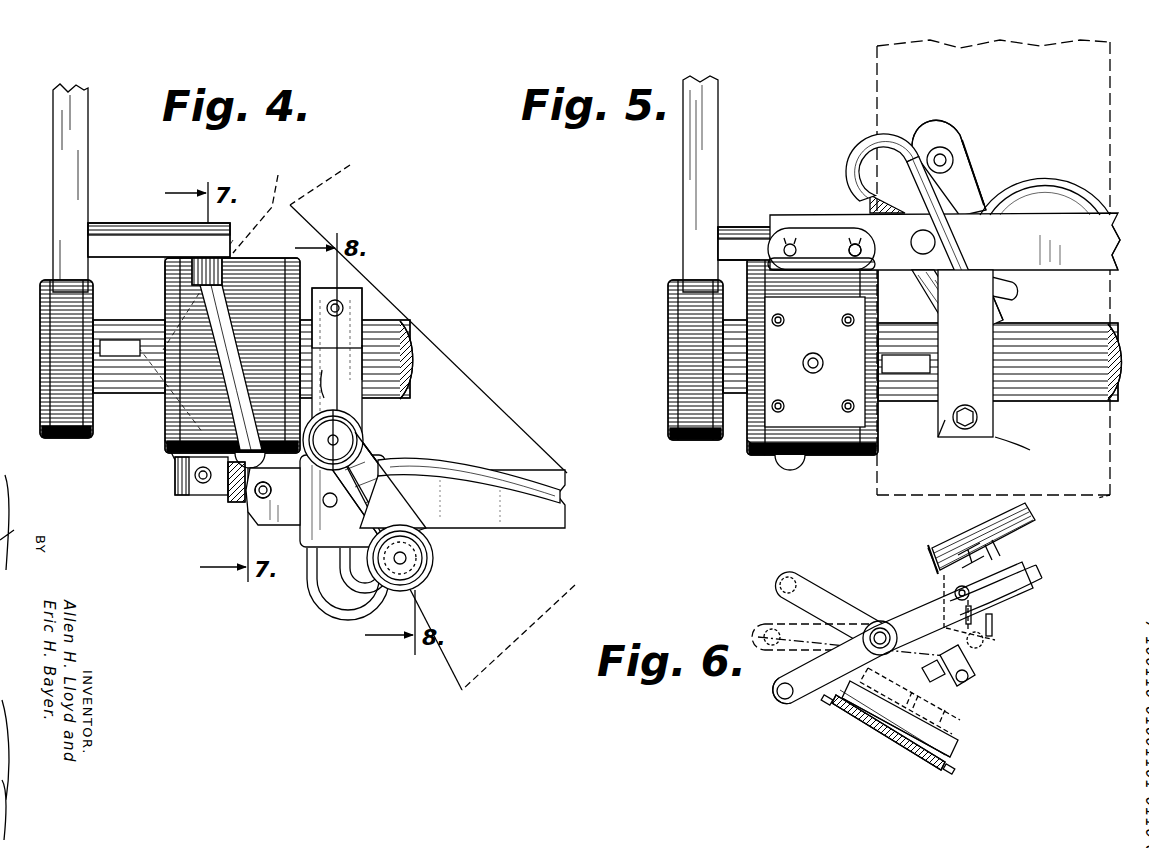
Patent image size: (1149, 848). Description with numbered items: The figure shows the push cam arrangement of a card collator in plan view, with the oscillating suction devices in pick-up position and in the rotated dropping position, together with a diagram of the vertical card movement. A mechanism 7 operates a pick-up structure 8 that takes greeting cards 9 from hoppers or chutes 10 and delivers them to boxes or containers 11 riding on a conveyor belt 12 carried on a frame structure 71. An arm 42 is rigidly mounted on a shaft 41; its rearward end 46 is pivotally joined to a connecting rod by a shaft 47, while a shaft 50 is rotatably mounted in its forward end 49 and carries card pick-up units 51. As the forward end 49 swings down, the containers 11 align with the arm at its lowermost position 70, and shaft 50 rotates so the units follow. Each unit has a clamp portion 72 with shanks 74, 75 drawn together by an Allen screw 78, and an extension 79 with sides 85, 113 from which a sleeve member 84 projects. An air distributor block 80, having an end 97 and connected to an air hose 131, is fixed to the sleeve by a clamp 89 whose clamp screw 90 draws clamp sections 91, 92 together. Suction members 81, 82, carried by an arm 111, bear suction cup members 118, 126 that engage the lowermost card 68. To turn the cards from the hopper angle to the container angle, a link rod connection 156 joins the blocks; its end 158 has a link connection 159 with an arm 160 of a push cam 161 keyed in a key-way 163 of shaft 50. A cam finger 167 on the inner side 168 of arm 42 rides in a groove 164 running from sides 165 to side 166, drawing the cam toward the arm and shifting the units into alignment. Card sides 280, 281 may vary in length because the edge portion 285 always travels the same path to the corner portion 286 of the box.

In FIG. 6, the mechanism 7 is at (788, 702).
In FIG. 6, the pick-up structure 8 is at (984, 643).
In FIG. 4, the greeting cards 9 is at (490, 398).
In FIG. 6, the greeting cards 9 is at (984, 530).
In FIG. 6, the hoppers or chutes 10 is at (932, 560).
In FIG. 5, the boxes or containers 11 is at (877, 68).
In FIG. 6, the boxes or containers 11 is at (952, 755).
In FIG. 6, the conveyor belt 12 is at (862, 720).
In FIG. 6, the shaft 41 is at (880, 630).
In FIG. 4, the arm 42 is at (62, 152).
In FIG. 5, the arm 42 is at (692, 162).
In FIG. 6, the arm 42 is at (918, 608).
In FIG. 6, the rearward ends of the arms 46 is at (775, 700).
In FIG. 6, the shaft 47 is at (780, 690).
In FIG. 4, the forward ends of the arms 49 is at (63, 440).
In FIG. 5, the forward ends of the arms 49 is at (695, 440).
In FIG. 4, the shaft 50 is at (385, 338).
In FIG. 5, the shaft 50 is at (1062, 400).
In FIG. 6, the shaft 50 is at (1000, 582).
In FIG. 4, the card pick-up units 51 is at (372, 452).
In FIG. 5, the card pick-up units 51 is at (1000, 320).
In FIG. 6, the card pick-up units 51 is at (985, 572).
In FIG. 6, the lowermost card 68 is at (1018, 536).
In FIG. 6, the lowermost position of the arms 70 is at (955, 740).
In FIG. 6, the frame structure 71 is at (928, 762).
In FIG. 4, the clamp portion 72 is at (352, 292).
In FIG. 5, the clamp portion 72 is at (993, 365).
In FIG. 4, the shank 74 is at (358, 313).
In FIG. 5, the shank 75 is at (942, 437).
In FIG. 4, the Allen screw 78 is at (340, 300).
In FIG. 5, the Allen screw 78 is at (968, 427).
In FIG. 4, the extension 79 is at (348, 410).
In FIG. 4, the air distributor block 80 is at (312, 522).
In FIG. 5, the air distributor block 80 is at (1005, 286).
In FIG. 4, the suction member 81 is at (325, 384).
In FIG. 4, the suction member 82 is at (438, 565).
In FIG. 5, the sleeve member 84 is at (990, 300).
In FIG. 5, the side of the extension 85 is at (945, 330).
In FIG. 5, the clamp 89 is at (977, 345).
In FIG. 5, the clamp screw 90 is at (956, 333).
In FIG. 5, the clamp section 91 is at (1000, 280).
In FIG. 5, the clamp section 92 is at (995, 328).
In FIG. 4, the end of the block 97 is at (332, 592).
In FIG. 5, the end of the block 97 is at (866, 172).
In FIG. 4, the arm 111 is at (425, 585).
In FIG. 6, the arm 111 is at (972, 553).
In FIG. 4, the side of the extension 113 is at (352, 360).
In FIG. 4, the rubber suction cup member 118 is at (362, 440).
In FIG. 4, the flexible suction cup 126 is at (425, 553).
In FIG. 5, the flexible suction cup 126 is at (968, 166).
In FIG. 4, the air hose 131 is at (470, 488).
In FIG. 5, the air hose 131 is at (1050, 182).
In FIG. 4, the link rod connection 156 is at (548, 528).
In FIG. 5, the link rod connection 156 is at (1100, 265).
In FIG. 4, the end of the rod 158 is at (258, 518).
In FIG. 5, the end of the rod 158 is at (855, 218).
In FIG. 4, the link connection 159 is at (236, 495).
In FIG. 5, the link connection 159 is at (818, 240).
In FIG. 4, the arm 160 is at (186, 495).
In FIG. 5, the arm 160 is at (778, 245).
In FIG. 4, the push cam 161 is at (176, 462).
In FIG. 5, the push cam 161 is at (766, 460).
In FIG. 4, the key-way 163 is at (107, 335).
In FIG. 5, the key-way 163 is at (890, 358).
In FIG. 4, the groove 164 is at (218, 330).
In FIG. 5, the groove 164 is at (806, 460).
In FIG. 4, the side of the push cam 165 is at (272, 470).
In FIG. 4, the side of the push cam 166 is at (178, 268).
In FIG. 4, the cam finger 167 is at (213, 262).
In FIG. 5, the cam finger 167 is at (728, 225).
In FIG. 4, the inner side of the arm 168 is at (88, 207).
In FIG. 5, the inner side of the arm 168 is at (722, 148).
In FIG. 4, the side of the card 280 is at (271, 203).
In FIG. 4, the side of the card 281 is at (455, 372).
In FIG. 4, the edge portion of the card 285 is at (432, 422).
In FIG. 5, the corner portion 286 is at (1105, 493).